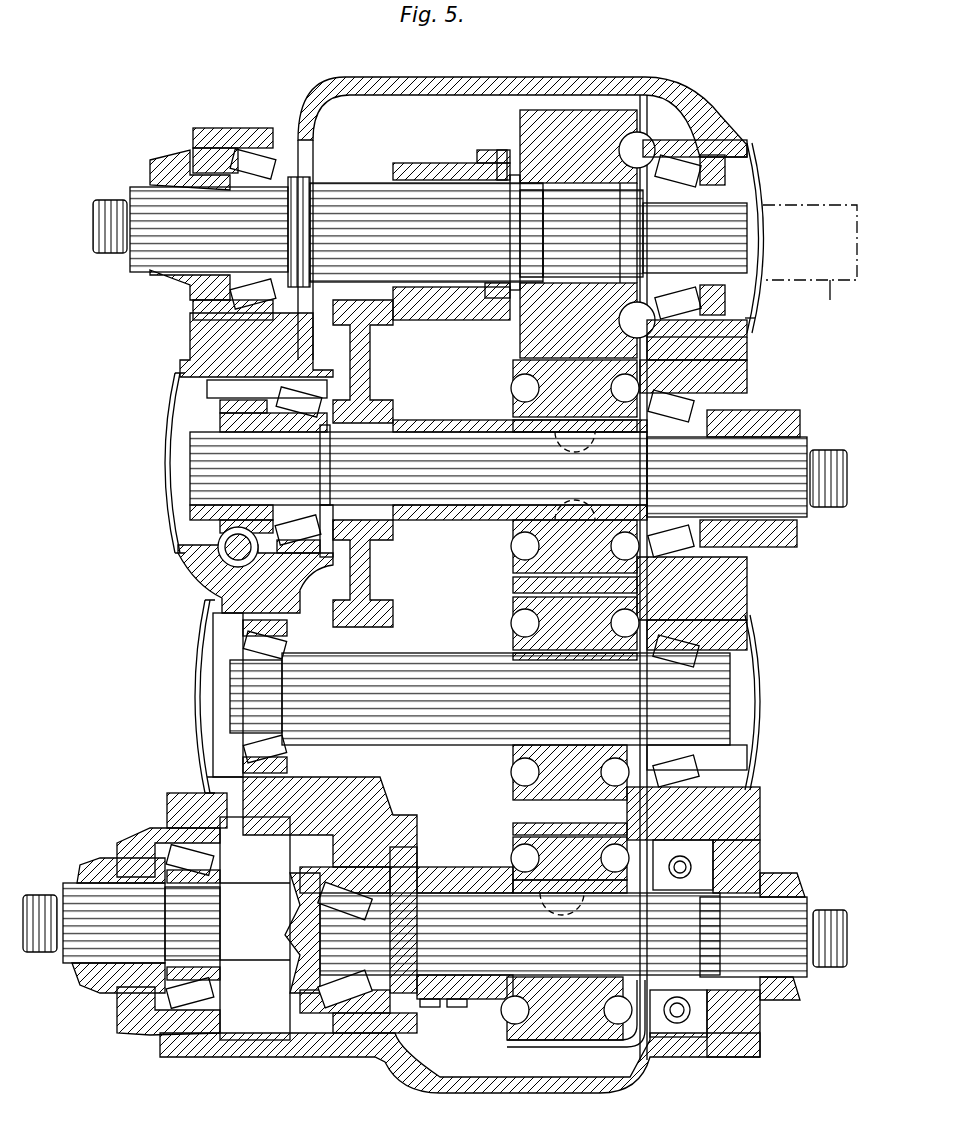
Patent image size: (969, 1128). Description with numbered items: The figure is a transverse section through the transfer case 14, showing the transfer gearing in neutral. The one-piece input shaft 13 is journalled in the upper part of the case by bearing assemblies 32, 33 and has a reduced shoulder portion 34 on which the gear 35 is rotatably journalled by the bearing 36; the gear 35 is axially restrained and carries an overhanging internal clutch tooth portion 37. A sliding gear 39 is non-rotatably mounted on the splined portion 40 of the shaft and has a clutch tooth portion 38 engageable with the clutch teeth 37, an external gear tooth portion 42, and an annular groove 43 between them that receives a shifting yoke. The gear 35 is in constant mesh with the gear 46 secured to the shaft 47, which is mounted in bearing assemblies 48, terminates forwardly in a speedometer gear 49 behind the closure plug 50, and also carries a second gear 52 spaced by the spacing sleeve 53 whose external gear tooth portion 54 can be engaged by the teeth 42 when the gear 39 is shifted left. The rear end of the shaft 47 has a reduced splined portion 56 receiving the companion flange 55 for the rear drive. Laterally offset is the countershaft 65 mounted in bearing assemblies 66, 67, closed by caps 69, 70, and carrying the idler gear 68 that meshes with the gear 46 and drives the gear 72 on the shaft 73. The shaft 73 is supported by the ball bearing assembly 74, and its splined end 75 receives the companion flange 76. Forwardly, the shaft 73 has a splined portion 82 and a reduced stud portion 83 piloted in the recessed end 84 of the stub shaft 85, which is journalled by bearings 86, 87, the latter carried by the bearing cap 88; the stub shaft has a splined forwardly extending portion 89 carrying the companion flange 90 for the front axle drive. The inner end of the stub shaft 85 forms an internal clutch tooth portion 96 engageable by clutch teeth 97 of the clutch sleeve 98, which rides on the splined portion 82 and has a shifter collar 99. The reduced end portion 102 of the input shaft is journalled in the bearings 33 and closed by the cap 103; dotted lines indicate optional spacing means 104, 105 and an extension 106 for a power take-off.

The transfer case 14 is at (345, 75).
The input shaft 13 is at (145, 200).
The bearing assembly 32 is at (262, 160).
The bearing assembly 33 is at (690, 155).
The reduced shoulder portion 34 is at (515, 295).
The gear 35 is at (600, 135).
The bearing 36 is at (610, 285).
The internal clutch tooth portion 37 is at (503, 160).
The clutch tooth portion 38 is at (495, 300).
The sliding gear 39 is at (398, 165).
The splined portion 40 is at (355, 190).
The external gear tooth portion 42 is at (420, 320).
The annular groove 43 is at (482, 160).
The gear 46 is at (530, 555).
The shaft 47 is at (445, 430).
The bearing assemblies 48 is at (240, 368).
The speedometer gear 49 is at (215, 400).
The closure plug 50 is at (165, 420).
The second gear 52 is at (360, 422).
The spacing sleeve 53 is at (455, 522).
The external gear tooth portion 54 is at (360, 305).
The companion flange 55 is at (780, 415).
The reduced splined portion 56 is at (790, 447).
The countershaft 65 is at (445, 656).
The bearing assembly 66 is at (255, 636).
The bearing assembly 67 is at (700, 650).
The gear 68 is at (530, 760).
The cap 69 is at (200, 672).
The cap 70 is at (752, 680).
The gear 72 is at (515, 815).
The shaft 73 is at (520, 870).
The ball bearing assembly 74 is at (700, 866).
The splined end 75 is at (790, 902).
The companion flange 76 is at (795, 1000).
The splined portion 82 is at (470, 1002).
The reduced stud portion 83 is at (330, 993).
The recessed end 84 is at (300, 975).
The stub shaft 85 is at (265, 885).
The bearing 86 is at (358, 815).
The bearing assembly 87 is at (188, 825).
The bearing cap 88 is at (150, 830).
The splined forwardly extending portion 89 is at (95, 950).
The companion flange 90 is at (100, 860).
The internal clutch tooth portion 96 is at (406, 848).
The clutch teeth 97 is at (430, 1007).
The clutch sleeve 98 is at (452, 1007).
The shifter collar 99 is at (470, 868).
The reduced end portion 102 is at (725, 262).
The cap 103 is at (757, 148).
The spacing means 104 is at (757, 185).
The spacing means 105 is at (755, 318).
The extended shaft portion 106 is at (820, 292).